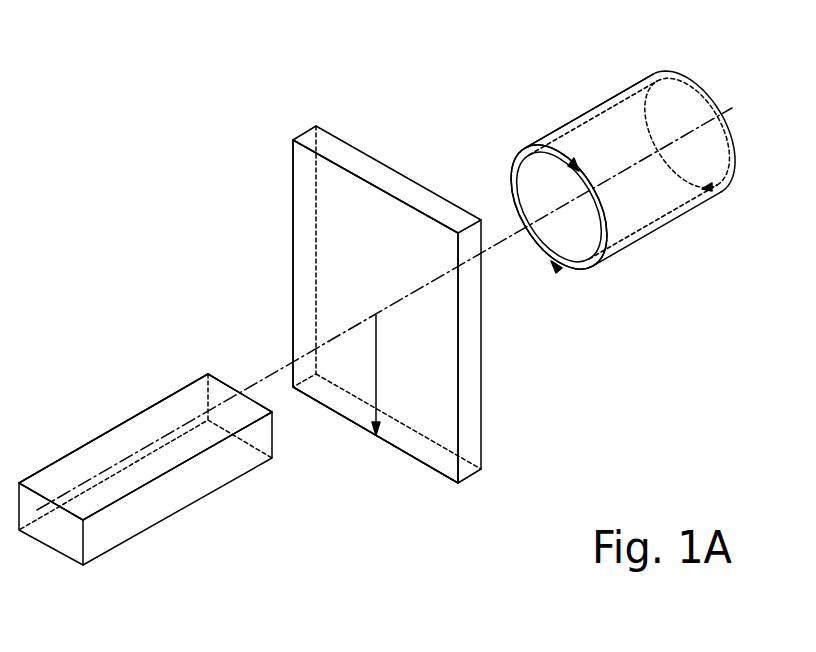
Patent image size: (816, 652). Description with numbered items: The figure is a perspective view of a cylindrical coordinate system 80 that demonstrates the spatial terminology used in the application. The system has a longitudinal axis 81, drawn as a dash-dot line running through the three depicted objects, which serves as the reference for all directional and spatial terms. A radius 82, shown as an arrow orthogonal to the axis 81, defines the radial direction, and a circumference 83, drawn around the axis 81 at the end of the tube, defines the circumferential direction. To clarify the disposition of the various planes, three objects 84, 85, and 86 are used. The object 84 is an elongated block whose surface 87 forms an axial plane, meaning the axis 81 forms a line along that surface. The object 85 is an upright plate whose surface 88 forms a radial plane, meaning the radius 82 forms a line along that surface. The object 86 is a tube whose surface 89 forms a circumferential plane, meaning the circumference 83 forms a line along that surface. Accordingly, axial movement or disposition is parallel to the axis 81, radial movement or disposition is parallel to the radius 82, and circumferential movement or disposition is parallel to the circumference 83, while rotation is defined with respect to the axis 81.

The cylindrical coordinate system 80 is at (252, 185).
The longitudinal axis 81 is at (726, 104).
The radius 82 is at (376, 367).
The circumference 83 is at (512, 172).
The object 84 is at (108, 550).
The object 85 is at (490, 476).
The object 86 is at (650, 245).
The surface 87 is at (104, 452).
The surface 88 is at (307, 262).
The surface 89 is at (588, 110).